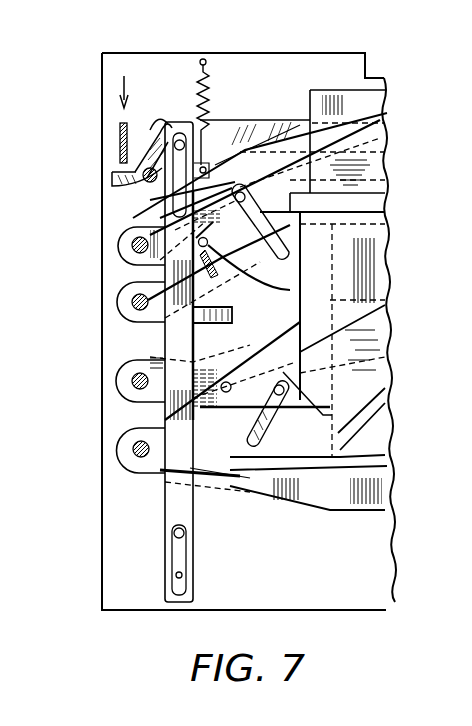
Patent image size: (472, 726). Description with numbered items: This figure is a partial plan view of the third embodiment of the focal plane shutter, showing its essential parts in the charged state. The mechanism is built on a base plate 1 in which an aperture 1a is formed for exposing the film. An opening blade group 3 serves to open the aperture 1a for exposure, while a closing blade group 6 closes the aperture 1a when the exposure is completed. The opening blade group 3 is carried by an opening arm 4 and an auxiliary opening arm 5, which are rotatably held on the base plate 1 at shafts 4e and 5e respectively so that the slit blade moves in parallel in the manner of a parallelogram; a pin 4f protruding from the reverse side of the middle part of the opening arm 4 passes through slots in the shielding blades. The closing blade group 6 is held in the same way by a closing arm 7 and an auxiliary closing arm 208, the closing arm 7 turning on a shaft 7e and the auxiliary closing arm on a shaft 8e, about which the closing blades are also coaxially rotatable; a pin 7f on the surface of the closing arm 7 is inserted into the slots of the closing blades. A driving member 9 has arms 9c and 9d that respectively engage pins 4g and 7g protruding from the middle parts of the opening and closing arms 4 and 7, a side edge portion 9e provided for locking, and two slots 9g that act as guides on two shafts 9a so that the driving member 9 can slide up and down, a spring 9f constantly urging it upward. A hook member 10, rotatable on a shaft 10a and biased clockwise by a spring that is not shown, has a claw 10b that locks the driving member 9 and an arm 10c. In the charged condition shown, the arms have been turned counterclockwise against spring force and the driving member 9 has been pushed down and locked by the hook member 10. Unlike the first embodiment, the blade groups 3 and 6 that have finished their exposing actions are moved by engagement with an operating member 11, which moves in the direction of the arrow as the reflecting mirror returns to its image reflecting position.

The base plate 1 is at (363, 560).
The aperture 1a is at (391, 463).
The opening blade group 3 is at (402, 237).
The opening arm 4 is at (132, 364).
The shaft 4e is at (130, 386).
The pin 4f is at (286, 377).
The pin 4g is at (225, 382).
The auxiliary opening arm 5 is at (132, 434).
The shaft 5e is at (130, 455).
The closing blade group 6 is at (402, 85).
The closing arm 7 is at (130, 296).
The shaft 7e is at (128, 312).
The pin 7f is at (250, 190).
The pin 7g is at (209, 249).
The shaft 8e is at (130, 252).
The driving member 9 is at (173, 505).
The shaft 9a is at (208, 128).
The arm 9c is at (216, 492).
The arm 9d is at (234, 313).
The side edge portion 9e is at (186, 128).
The spring 9f is at (207, 128).
The slot 9g is at (178, 580).
The hook member 10 is at (147, 128).
The shaft 10a is at (122, 198).
The claw 10b is at (163, 114).
The arm 10c is at (120, 166).
The operating member 11 is at (118, 138).
The auxiliary closing arm 208 is at (126, 232).